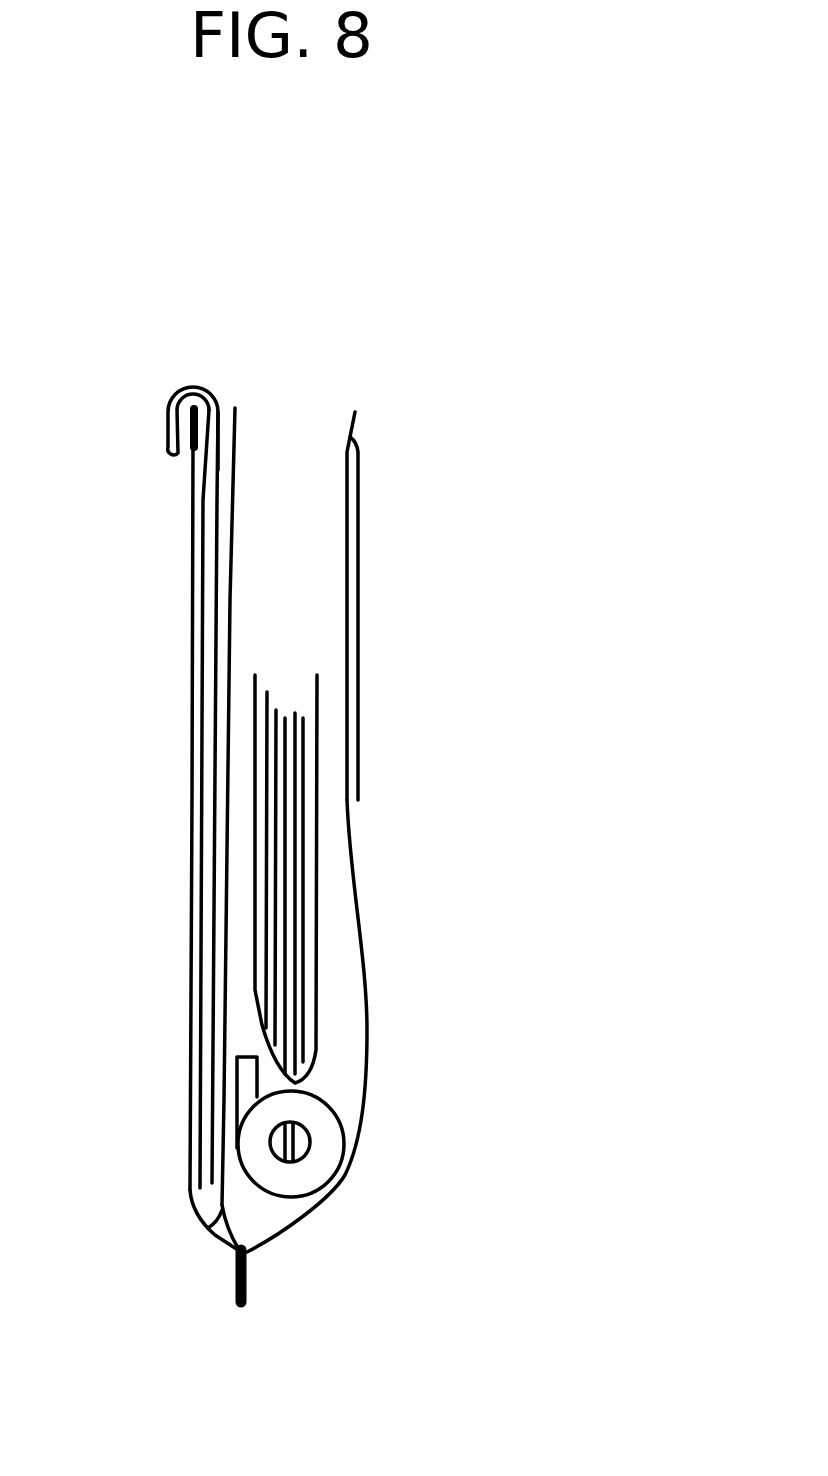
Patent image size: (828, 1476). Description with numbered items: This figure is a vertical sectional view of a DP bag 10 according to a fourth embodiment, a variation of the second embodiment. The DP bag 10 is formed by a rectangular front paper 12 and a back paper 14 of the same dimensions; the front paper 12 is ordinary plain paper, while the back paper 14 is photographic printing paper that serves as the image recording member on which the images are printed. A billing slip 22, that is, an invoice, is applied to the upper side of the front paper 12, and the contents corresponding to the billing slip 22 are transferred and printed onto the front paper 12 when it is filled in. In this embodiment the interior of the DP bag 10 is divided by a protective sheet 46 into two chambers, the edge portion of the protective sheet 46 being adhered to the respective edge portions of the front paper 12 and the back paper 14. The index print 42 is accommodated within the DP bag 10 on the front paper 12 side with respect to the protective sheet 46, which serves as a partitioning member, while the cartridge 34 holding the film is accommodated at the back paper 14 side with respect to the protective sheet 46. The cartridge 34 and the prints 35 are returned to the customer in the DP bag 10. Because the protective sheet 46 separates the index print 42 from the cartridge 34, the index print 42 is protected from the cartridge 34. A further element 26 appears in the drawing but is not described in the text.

The DP bag 10 is at (357, 395).
The front paper 12 is at (290, 1225).
The back paper 14 is at (193, 1205).
The billing slip 22 is at (360, 748).
The latch stem 26 is at (213, 663).
The cartridge 34 is at (308, 1167).
The prints 35 is at (283, 702).
The index print 42 is at (197, 536).
The protective sheet 46 is at (207, 1228).